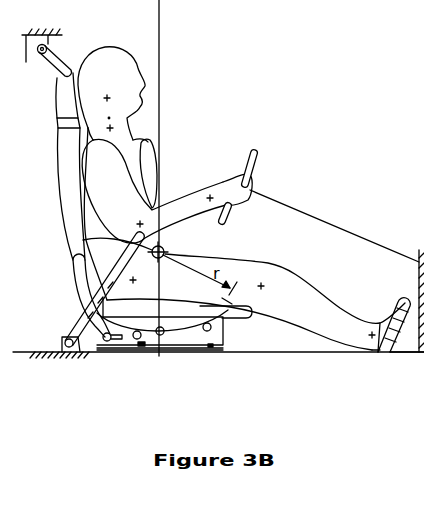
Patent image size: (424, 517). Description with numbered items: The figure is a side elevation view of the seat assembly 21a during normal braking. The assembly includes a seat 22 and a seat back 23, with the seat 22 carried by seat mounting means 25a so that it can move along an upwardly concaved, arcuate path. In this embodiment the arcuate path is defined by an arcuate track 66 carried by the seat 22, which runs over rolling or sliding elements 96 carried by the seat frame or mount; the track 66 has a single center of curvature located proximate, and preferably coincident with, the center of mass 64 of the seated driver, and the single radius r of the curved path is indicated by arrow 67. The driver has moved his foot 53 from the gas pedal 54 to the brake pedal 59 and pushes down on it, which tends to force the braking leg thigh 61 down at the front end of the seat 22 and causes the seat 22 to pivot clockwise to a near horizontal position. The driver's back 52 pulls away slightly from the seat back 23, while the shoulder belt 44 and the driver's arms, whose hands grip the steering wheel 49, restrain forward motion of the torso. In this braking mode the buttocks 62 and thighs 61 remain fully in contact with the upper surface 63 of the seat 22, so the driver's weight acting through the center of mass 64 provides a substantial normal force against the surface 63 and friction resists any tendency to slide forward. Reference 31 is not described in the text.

The fixed structure (ceiling and floor) 31 is at (297, 372).
The back 52 is at (82, 146).
The shoulder belt 44 is at (157, 177).
The steering wheel 49 is at (256, 168).
The seat back 23 is at (75, 210).
The center of mass 64 is at (83, 240).
The upper surface 63 is at (173, 297).
The arrow 67 is at (228, 300).
The thigh 61 is at (260, 297).
The buttocks 62 is at (136, 339).
The rolling or sliding elements 96 is at (160, 335).
The track 66 is at (190, 318).
The seat 22 is at (234, 310).
The brake pedal 59 is at (404, 308).
The foot 53 is at (383, 337).
The gas pedal 54 is at (404, 352).
The seat assembly 21a is at (67, 367).
The seat mounting means 25a is at (143, 363).